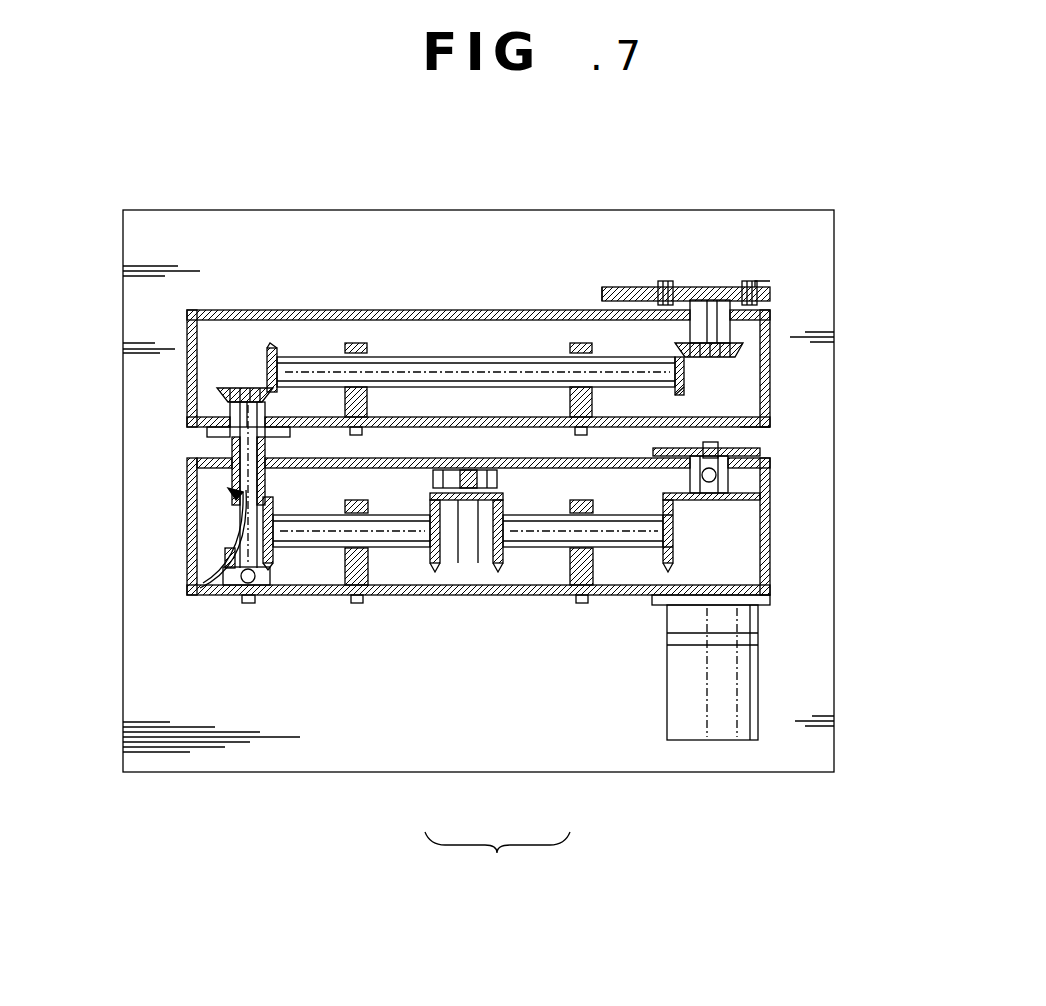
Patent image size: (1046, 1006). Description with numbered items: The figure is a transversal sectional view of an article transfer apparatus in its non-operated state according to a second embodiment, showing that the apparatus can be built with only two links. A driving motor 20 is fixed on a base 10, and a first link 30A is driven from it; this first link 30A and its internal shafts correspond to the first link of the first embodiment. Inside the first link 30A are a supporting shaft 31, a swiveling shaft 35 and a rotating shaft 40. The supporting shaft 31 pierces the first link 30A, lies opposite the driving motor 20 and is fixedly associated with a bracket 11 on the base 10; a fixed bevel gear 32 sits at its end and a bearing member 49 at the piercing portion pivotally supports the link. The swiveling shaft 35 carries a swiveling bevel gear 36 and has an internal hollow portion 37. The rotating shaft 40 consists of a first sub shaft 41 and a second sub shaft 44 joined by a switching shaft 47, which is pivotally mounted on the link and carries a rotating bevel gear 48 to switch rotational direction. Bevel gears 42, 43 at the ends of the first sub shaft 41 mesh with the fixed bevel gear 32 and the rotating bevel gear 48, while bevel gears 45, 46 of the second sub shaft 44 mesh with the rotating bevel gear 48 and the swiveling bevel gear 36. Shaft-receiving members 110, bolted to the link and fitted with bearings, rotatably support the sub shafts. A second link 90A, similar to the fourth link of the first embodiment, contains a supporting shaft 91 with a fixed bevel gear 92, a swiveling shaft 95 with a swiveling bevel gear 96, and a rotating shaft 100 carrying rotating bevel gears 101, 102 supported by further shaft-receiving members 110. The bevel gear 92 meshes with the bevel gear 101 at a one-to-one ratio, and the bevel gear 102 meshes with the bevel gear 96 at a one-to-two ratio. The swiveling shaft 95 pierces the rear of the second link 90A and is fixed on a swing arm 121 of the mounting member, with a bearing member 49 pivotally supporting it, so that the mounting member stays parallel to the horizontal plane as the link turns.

The base 10 is at (273, 772).
The bracket 11 is at (752, 432).
The driving motor 20 is at (752, 730).
The first link 30A is at (770, 570).
The supporting shaft 31 is at (762, 472).
The fixed bevel gear 32 is at (770, 520).
The swiveling shaft 35 is at (227, 477).
The swiveling bevel gear 36 is at (258, 532).
The hollow portion 37 is at (223, 587).
The rotating shaft 40 is at (497, 856).
The first sub shaft 41 is at (558, 547).
The bevel gear 42 is at (668, 558).
The bevel gear 43 is at (498, 548).
The second sub shaft 44 is at (328, 523).
The bevel gear 45 is at (433, 548).
The bevel gear 46 is at (283, 597).
The switching shaft 47 is at (476, 560).
The rotating bevel gear 48 is at (497, 472).
The bearing member 49 is at (660, 290).
The second link 90A is at (770, 366).
The supporting shaft 91 is at (237, 412).
The fixed bevel gear 92 is at (228, 393).
The swiveling shaft 95 is at (690, 322).
The swiveling bevel gear 96 is at (745, 340).
The rotating shaft 100 is at (405, 357).
The rotating bevel gear 101 is at (272, 348).
The rotating bevel gear 102 is at (673, 370).
The shaft-receiving member 110 is at (352, 343).
The swing arm 121 is at (770, 293).